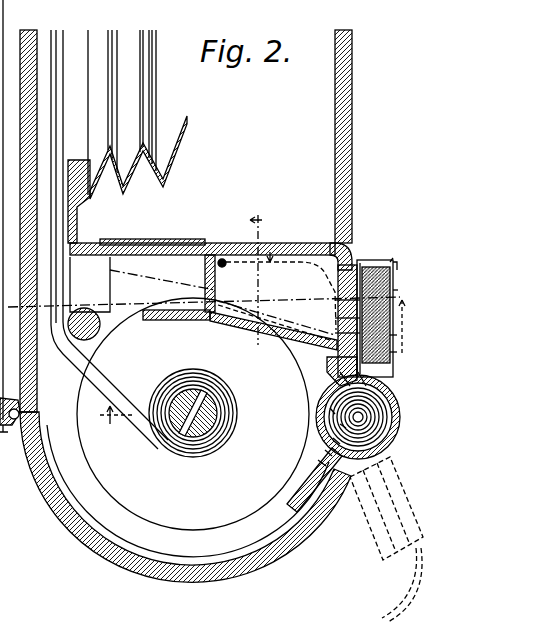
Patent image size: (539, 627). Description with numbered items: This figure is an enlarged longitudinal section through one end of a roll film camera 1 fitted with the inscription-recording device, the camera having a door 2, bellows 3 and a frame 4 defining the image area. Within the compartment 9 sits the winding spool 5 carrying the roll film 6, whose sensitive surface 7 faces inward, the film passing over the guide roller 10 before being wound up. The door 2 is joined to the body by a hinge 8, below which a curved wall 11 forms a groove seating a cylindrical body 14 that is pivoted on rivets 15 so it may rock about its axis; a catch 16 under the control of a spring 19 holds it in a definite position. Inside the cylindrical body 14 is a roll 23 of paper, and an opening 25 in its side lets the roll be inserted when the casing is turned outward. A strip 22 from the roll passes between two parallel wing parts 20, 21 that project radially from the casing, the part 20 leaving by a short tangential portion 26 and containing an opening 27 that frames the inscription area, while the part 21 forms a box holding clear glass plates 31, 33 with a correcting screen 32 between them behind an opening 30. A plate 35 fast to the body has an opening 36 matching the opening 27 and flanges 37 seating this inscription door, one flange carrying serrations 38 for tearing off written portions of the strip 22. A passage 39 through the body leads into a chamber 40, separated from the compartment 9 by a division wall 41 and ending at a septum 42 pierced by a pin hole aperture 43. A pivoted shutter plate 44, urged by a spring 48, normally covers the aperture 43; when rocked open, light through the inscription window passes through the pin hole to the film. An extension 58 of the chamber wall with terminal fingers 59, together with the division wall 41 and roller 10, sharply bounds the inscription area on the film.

The camera 1 is at (22, 162).
The door 2 is at (335, 98).
The bellows 3 is at (182, 137).
The frame 4 is at (170, 195).
The spool 5 is at (197, 438).
The roll film 6 is at (97, 360).
The sensitive surface 7 is at (99, 347).
The hinge 8 is at (336, 242).
The compartment 9 is at (147, 553).
The guide roller 10 is at (100, 326).
The curved wall 11 is at (340, 425).
The cylindrical body 14 is at (392, 402).
The rivets 15 is at (334, 440).
The catch 16 is at (9, 437).
The spring 19 is at (8, 400).
The wing part 20 is at (360, 262).
The wing part 21 is at (390, 273).
The strip 22 is at (393, 265).
The roll 23 is at (326, 452).
The opening 25 is at (318, 462).
The tangential portion 26 is at (325, 410).
The opening 27 is at (398, 470).
The opening 30 is at (362, 540).
The plate 31 is at (335, 319).
The plate 32 is at (335, 334).
The plate 33 is at (403, 335).
The plate 35 is at (330, 364).
The opening 36 is at (330, 296).
The flanges 37 is at (347, 265).
The serrations 38 is at (392, 260).
The passage 39 is at (335, 303).
The chamber 40 is at (276, 243).
The division wall 41 is at (250, 325).
The septum 42 is at (205, 272).
The aperture 43 is at (165, 320).
The plate 44 is at (216, 290).
The spring 48 is at (222, 258).
The extension 58 is at (90, 245).
The terminal fingers 59 is at (75, 282).